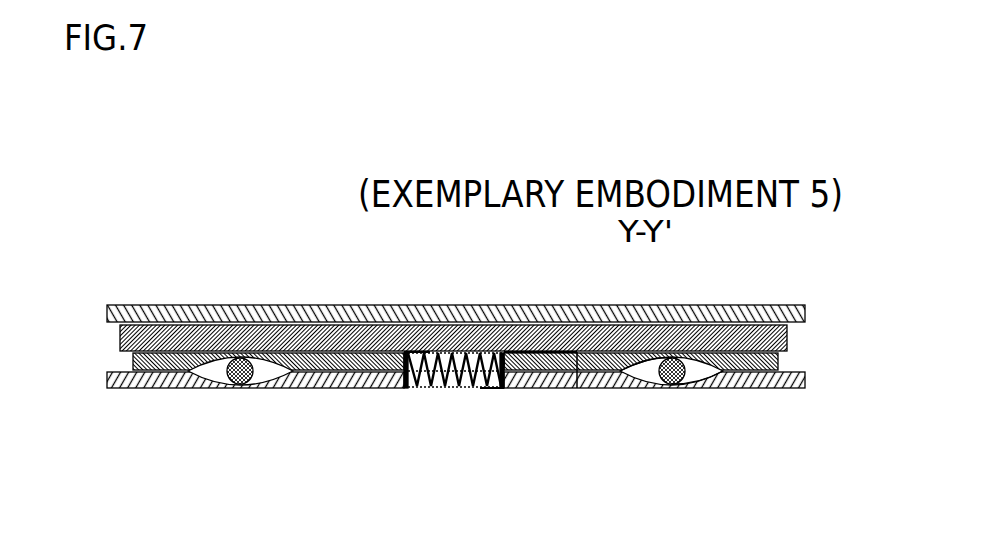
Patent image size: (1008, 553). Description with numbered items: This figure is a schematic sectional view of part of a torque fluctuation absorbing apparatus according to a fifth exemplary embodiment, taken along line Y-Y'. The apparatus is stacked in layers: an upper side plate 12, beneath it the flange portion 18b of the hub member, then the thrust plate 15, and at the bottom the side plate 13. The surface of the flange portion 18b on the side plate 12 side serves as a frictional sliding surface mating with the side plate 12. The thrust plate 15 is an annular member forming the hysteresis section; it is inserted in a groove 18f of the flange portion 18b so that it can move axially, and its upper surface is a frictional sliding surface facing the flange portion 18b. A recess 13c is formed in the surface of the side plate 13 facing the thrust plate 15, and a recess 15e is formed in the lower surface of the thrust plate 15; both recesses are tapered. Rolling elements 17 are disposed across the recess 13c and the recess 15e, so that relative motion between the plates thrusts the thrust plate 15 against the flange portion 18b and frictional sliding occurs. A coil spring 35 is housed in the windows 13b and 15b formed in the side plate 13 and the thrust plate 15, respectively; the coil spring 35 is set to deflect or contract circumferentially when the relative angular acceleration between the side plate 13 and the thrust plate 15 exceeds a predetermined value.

The side plate 12 is at (308, 312).
The side plate 13 is at (303, 388).
The window 13b is at (488, 392).
The recess 13c is at (705, 378).
The thrust plate 15 is at (382, 364).
The window 15b is at (420, 353).
The recess 15e is at (635, 366).
The rolling element 17 is at (670, 377).
The flange portion 18b is at (538, 338).
The groove 18f is at (577, 388).
The coil spring 35 is at (440, 388).